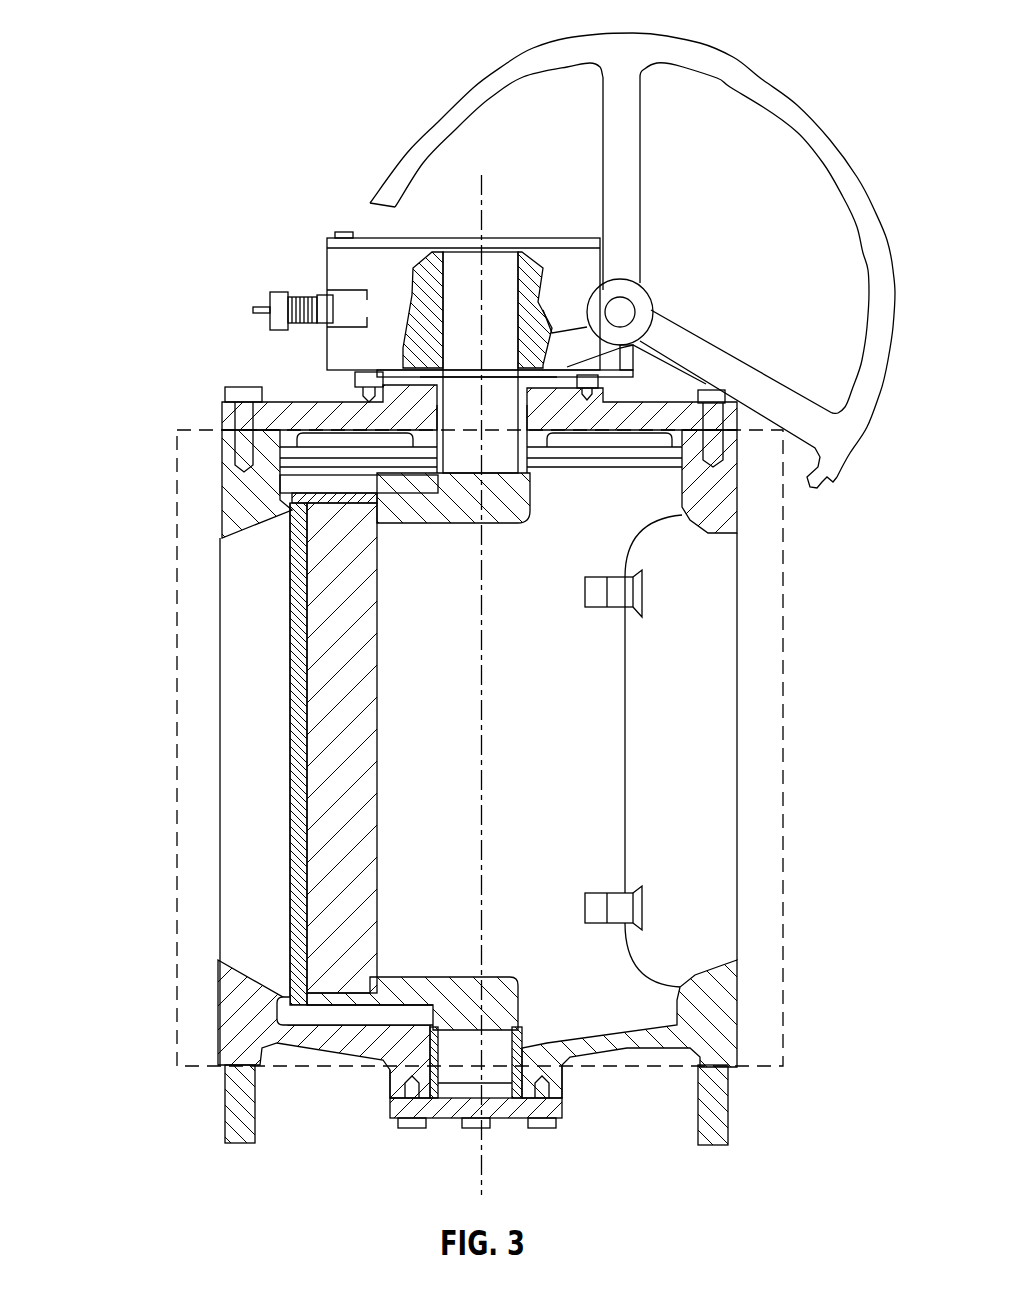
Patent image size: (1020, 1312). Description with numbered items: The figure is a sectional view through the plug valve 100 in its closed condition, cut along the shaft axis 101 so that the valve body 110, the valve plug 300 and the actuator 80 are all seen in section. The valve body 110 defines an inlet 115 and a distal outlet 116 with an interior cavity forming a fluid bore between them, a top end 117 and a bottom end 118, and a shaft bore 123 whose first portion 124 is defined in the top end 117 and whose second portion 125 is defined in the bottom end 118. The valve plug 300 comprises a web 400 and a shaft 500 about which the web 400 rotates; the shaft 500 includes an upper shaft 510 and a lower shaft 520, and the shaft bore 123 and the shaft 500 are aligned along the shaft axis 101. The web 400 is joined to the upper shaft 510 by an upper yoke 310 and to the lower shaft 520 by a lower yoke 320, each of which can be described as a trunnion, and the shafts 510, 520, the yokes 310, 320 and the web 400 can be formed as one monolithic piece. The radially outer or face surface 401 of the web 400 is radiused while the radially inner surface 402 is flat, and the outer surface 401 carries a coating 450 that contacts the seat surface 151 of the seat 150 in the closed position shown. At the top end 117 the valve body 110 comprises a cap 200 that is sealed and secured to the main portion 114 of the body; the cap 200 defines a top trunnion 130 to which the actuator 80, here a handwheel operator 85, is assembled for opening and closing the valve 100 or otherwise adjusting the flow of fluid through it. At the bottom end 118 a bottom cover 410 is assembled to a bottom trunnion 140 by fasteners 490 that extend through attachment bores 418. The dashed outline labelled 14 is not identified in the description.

The valve 100 is at (258, 148).
The handwheel operator 85 is at (812, 117).
The shaft axis 101 is at (484, 200).
The shaft 500 is at (398, 282).
The upper shaft 510 is at (433, 293).
The actuator 80 is at (323, 273).
The top trunnion 130 is at (350, 387).
The cap 200 is at (223, 425).
The top end 117 is at (673, 397).
The valve body section 14 is at (784, 858).
The inlet 115 is at (220, 752).
The outlet 116 is at (738, 705).
The shaft bore 123 is at (481, 508).
The first portion 124 is at (437, 440).
The second portion 125 is at (462, 994).
The seat 150 is at (435, 563).
The seat surface 151 is at (307, 512).
The upper yoke 310 is at (420, 507).
The valve plug 300 is at (322, 740).
The web 400 is at (322, 740).
The radially inner surface 402 is at (380, 728).
The radially outer surface 401 is at (288, 808).
The coating 450 is at (300, 657).
The bottom trunnion 140 is at (390, 1072).
The lower yoke 320 is at (390, 995).
The lower shaft 520 is at (530, 1040).
The valve body 110 is at (260, 1053).
The main portion 114 is at (225, 1105).
The bottom end 118 is at (628, 1053).
The attachment bores 418 is at (397, 1088).
The bottom cover 410 is at (453, 1118).
The fasteners 490 is at (400, 1128).